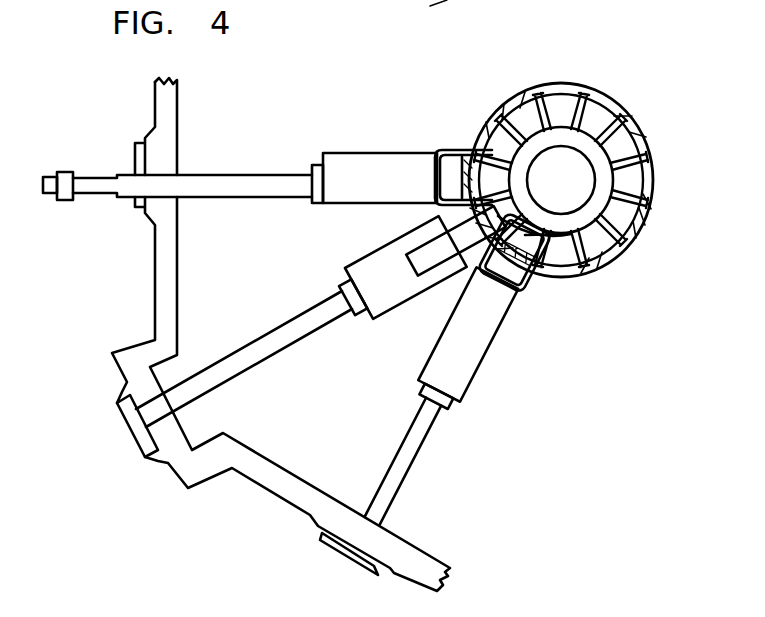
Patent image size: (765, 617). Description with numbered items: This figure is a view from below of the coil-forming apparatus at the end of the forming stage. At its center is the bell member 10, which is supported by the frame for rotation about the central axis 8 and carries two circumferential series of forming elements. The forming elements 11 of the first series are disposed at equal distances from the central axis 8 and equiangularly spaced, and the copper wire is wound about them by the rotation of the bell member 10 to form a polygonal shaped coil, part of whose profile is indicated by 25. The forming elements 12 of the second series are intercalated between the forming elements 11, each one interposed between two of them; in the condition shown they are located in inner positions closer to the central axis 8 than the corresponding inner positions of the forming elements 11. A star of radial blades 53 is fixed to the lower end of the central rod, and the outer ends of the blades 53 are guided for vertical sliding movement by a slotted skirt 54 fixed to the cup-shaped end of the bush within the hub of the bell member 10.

The central axis 8 is at (562, 181).
The bell member 10 is at (258, 472).
The forming elements of the first series 11 is at (449, 165).
The forming elements of the second series 12 is at (598, 268).
The coil profile 25 is at (433, 170).
The star of radial blades 53 is at (618, 134).
The slotted skirt 54 is at (566, 88).